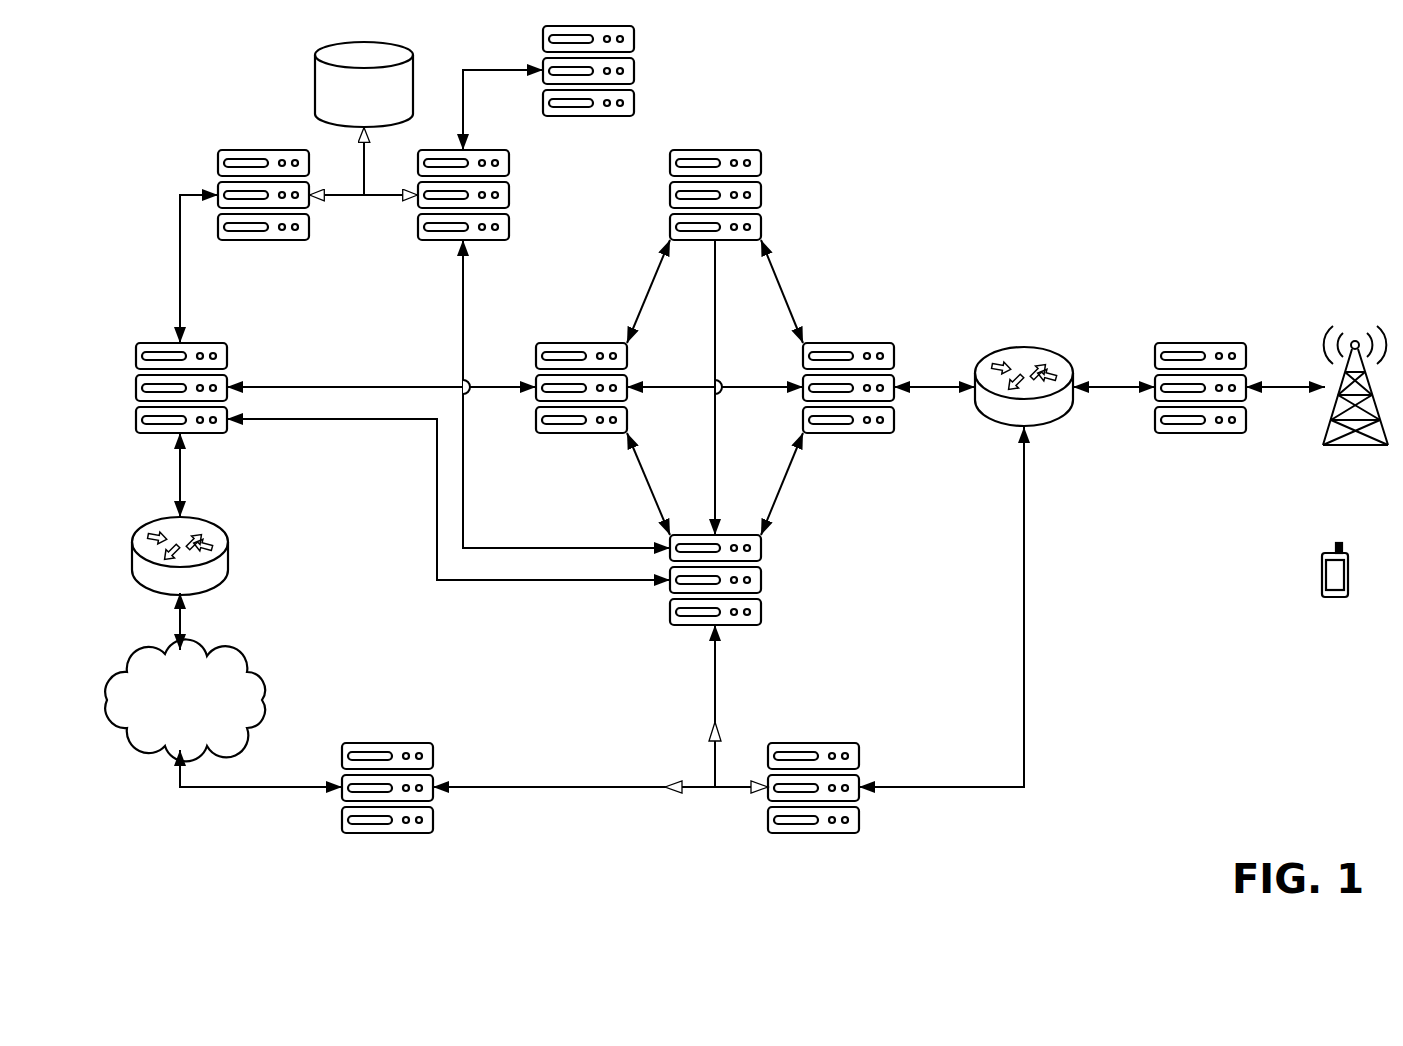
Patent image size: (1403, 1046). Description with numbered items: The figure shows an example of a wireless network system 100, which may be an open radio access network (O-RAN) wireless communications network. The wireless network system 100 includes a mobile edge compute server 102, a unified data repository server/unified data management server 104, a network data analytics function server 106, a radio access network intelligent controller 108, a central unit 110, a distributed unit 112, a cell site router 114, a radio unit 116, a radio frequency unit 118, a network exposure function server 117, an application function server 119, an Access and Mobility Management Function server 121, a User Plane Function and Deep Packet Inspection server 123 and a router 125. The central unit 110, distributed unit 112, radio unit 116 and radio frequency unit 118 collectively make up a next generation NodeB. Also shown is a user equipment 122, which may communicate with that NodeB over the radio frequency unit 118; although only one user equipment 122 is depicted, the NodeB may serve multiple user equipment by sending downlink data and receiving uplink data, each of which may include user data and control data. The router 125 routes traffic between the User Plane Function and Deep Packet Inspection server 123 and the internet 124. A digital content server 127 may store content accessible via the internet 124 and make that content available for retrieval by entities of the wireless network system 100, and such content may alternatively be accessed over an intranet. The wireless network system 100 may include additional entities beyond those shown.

The wireless network system 100 is at (1192, 137).
The mobile edge compute server 102 is at (842, 743).
The unified data repository server/unified data management server 104 is at (315, 88).
The network data analytics function server 106 is at (761, 583).
The radio access network intelligent controller 108 is at (745, 150).
The central unit 110 is at (600, 343).
The distributed unit 112 is at (855, 343).
The cell site router 114 is at (1033, 347).
The radio unit 116 is at (1215, 343).
The network exposure function server 117 is at (509, 226).
The radio frequency unit 118 is at (1378, 447).
The application function server 119 is at (620, 26).
The Access and Mobility Management Function server 121 is at (258, 150).
The user equipment 122 is at (1322, 573).
The User Plane Function and Deep Packet Inspection server 123 is at (215, 343).
The internet 124 is at (258, 668).
The router 125 is at (230, 552).
The digital content server 127 is at (422, 743).